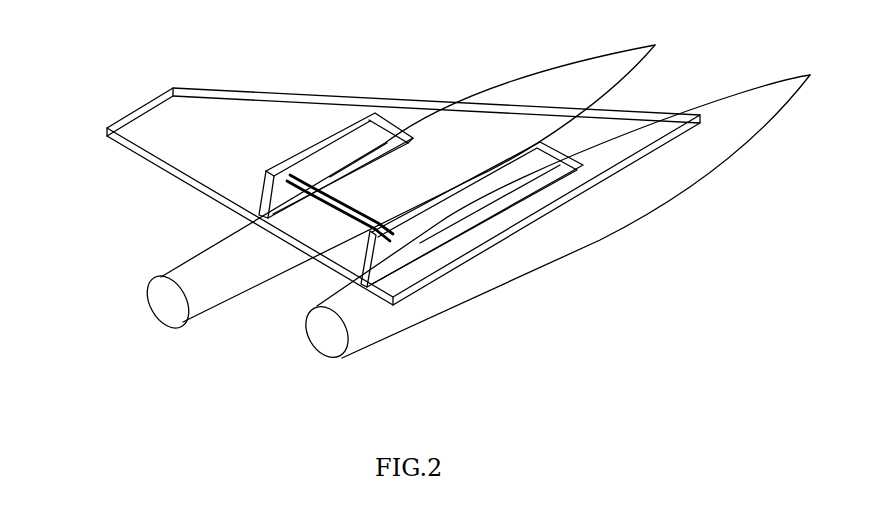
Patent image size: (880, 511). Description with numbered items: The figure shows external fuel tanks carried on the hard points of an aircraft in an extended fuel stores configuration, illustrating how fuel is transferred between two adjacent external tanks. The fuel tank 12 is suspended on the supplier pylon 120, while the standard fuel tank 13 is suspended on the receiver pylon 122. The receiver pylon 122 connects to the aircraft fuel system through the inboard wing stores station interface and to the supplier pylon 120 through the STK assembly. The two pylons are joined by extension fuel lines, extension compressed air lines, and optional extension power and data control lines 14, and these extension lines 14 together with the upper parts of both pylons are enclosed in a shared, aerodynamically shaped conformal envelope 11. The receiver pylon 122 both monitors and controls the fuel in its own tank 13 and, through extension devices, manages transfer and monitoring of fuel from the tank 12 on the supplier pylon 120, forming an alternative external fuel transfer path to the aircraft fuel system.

The conformal envelope 11 is at (190, 150).
The external fuel tank 12 is at (543, 82).
The standard fuel tank 13 is at (660, 180).
The extension lines 14 is at (330, 237).
The supplier pylon 120 is at (315, 143).
The receiver pylon 122 is at (383, 250).